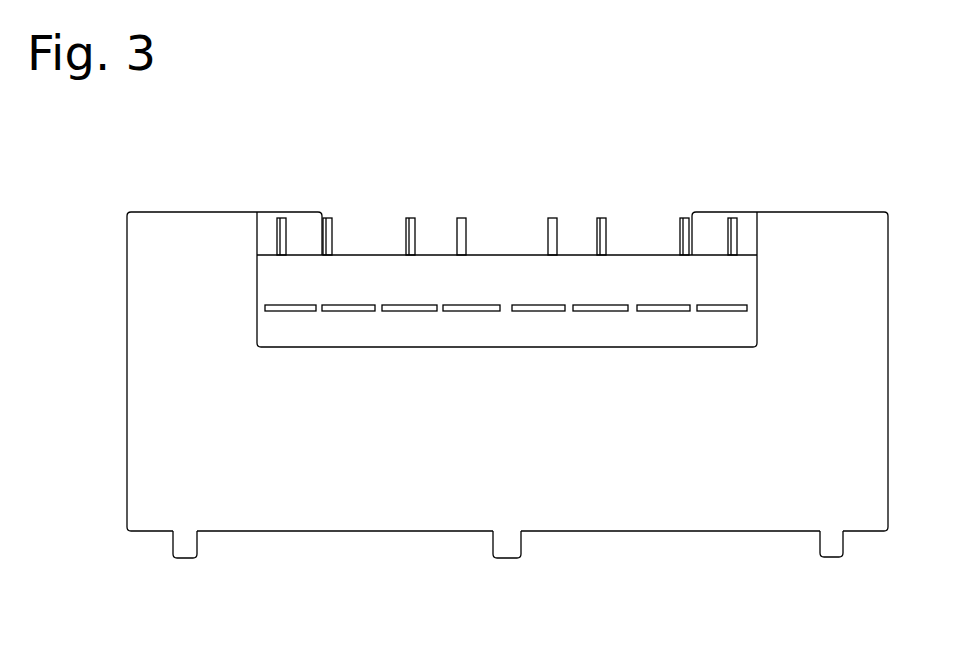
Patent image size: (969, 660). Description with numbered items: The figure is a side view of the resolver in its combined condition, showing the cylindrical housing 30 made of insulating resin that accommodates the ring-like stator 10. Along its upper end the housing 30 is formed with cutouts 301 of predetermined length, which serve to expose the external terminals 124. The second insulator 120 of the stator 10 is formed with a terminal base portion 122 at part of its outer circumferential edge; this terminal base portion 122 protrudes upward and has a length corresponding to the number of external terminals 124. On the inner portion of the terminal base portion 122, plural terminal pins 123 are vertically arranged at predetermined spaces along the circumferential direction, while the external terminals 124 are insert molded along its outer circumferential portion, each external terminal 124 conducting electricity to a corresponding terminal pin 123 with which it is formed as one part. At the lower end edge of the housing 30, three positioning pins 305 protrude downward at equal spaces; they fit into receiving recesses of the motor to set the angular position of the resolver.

The stator 10 is at (636, 247).
The housing 30 is at (126, 401).
The second insulator 120 is at (375, 254).
The terminal base portion 122 is at (505, 263).
The terminal pins 123 is at (456, 232).
The external terminals 124 is at (537, 313).
The cutouts 301 is at (647, 331).
The positioning pins 305 is at (503, 559).